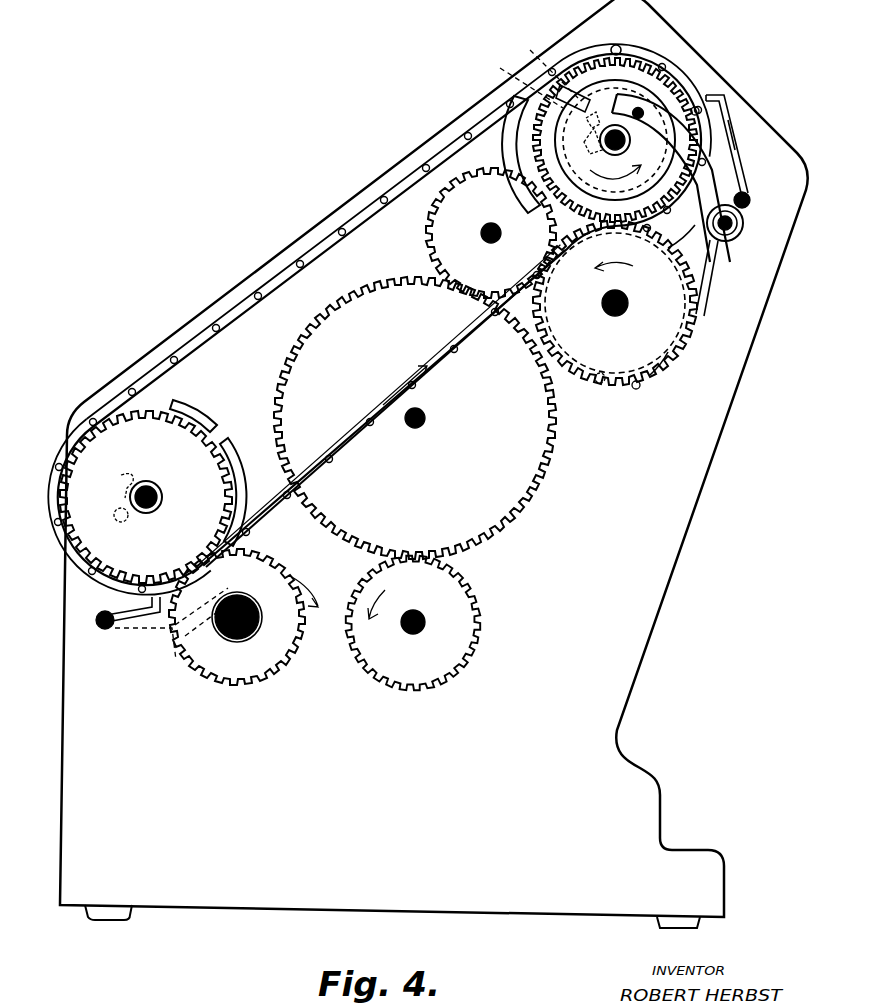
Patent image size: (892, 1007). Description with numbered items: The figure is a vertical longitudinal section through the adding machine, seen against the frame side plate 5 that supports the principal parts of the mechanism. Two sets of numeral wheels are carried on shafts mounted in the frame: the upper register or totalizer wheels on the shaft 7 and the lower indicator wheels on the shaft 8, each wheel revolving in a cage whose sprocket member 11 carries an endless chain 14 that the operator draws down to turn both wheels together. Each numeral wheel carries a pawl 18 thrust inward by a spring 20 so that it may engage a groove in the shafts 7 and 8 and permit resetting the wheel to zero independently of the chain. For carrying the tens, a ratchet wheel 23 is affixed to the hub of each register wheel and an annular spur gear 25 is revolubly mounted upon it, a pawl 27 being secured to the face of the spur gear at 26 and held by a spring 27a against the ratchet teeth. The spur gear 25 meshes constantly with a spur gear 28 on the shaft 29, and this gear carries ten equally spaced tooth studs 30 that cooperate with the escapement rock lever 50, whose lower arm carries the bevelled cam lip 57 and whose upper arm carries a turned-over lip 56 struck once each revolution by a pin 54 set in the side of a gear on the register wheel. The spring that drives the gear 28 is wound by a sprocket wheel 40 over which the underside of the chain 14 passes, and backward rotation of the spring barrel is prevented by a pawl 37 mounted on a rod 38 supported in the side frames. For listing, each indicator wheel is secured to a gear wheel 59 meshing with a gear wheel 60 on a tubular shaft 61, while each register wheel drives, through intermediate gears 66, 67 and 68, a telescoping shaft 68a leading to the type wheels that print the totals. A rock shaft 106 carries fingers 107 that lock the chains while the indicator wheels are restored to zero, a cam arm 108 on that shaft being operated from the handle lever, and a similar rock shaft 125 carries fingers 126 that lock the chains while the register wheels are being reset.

The side plate 5 is at (698, 511).
The shaft 7 is at (624, 145).
The shaft 8 is at (160, 498).
The sprocket member 11 is at (225, 445).
The endless chain 14 is at (240, 312).
The pawl 18 is at (608, 160).
The spring 20 is at (593, 142).
The ratchet wheel 23 is at (534, 140).
The annular spur gear 25 is at (726, 92).
The pawl securing point on spur gear face 26 is at (590, 66).
The pawl 27 is at (545, 74).
The spring 27a is at (515, 82).
The spur gear 28 is at (672, 366).
The shaft 29 is at (604, 302).
The tooth studs 30 is at (635, 389).
The pawl 37 is at (716, 266).
The rod 38 is at (744, 222).
The sprocket wheel 40 is at (690, 265).
The escapement rock lever 50 is at (708, 289).
The pin or stud 54 is at (696, 107).
The turned-over lip or projection 56 is at (640, 108).
The cam lip extension 57 is at (670, 328).
The gear wheel 59 is at (198, 426).
The gear wheel 60 is at (288, 655).
The tubular shaft 61 is at (255, 624).
The intermediate gear 66 is at (454, 230).
The intermediate gear 67 is at (362, 278).
The intermediate gear 68 is at (470, 594).
The telescoping shaft 68a is at (426, 626).
The rock shaft 106 is at (98, 625).
The fingers 107 is at (138, 632).
The cam arm 108 is at (173, 648).
The rock shaft 125 is at (750, 198).
The fingers 126 is at (738, 143).